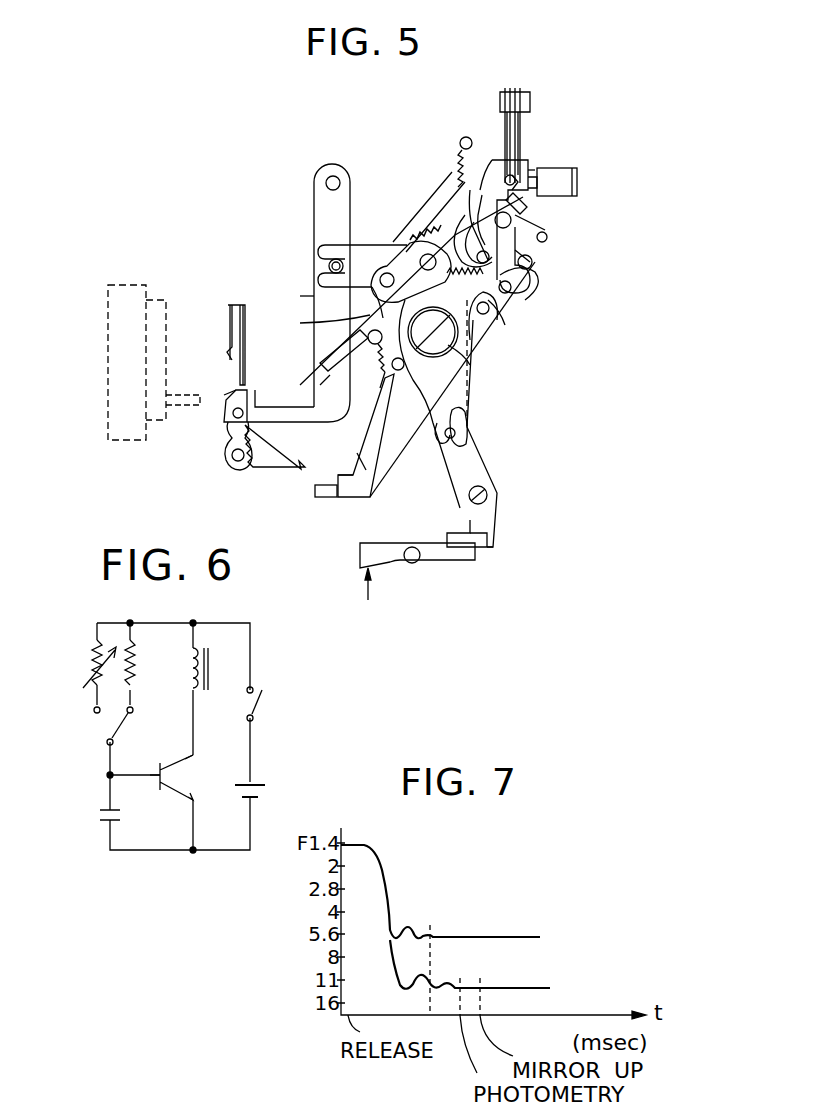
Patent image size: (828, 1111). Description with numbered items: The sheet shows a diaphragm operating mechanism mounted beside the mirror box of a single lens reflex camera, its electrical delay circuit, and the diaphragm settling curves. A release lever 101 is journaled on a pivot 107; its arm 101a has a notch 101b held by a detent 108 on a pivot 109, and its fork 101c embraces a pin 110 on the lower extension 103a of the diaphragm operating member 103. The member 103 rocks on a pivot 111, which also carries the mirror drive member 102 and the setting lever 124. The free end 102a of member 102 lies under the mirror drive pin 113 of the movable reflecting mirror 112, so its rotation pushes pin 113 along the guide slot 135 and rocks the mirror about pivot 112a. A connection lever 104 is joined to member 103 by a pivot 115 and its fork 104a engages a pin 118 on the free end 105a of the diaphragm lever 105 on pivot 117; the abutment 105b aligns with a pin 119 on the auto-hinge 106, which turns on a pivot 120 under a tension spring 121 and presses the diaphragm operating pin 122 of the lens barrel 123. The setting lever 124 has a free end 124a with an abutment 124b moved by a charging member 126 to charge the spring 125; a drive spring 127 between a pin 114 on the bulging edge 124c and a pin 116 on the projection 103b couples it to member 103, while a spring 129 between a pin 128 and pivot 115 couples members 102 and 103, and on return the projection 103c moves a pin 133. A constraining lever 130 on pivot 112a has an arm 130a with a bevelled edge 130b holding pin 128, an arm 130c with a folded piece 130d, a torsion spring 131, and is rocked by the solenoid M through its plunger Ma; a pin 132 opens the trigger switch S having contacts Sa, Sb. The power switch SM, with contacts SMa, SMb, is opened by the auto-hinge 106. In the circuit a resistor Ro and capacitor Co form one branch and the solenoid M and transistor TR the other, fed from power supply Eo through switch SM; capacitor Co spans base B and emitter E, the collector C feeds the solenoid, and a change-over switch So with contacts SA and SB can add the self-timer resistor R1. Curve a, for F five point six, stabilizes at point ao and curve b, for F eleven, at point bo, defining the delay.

In FIG. 5, the release lever 101 is at (498, 492).
In FIG. 5, the arm 101a is at (496, 522).
In FIG. 5, the notch 101b is at (488, 550).
In FIG. 5, the fork 101c is at (470, 455).
In FIG. 5, the mirror drive member 102 is at (528, 305).
In FIG. 5, the free end 102a is at (490, 265).
In FIG. 5, the diaphragm operating member 103 is at (405, 210).
In FIG. 5, the lower extension 103a is at (457, 435).
In FIG. 5, the left-hand projection 103b is at (314, 321).
In FIG. 5, the projection 103c is at (490, 314).
In FIG. 5, the connection lever 104 is at (368, 245).
In FIG. 5, the fork 104a is at (322, 254).
In FIG. 5, the diaphragm lever 105 is at (320, 185).
In FIG. 5, the free end 105a is at (316, 296).
In FIG. 5, the abutment 105b is at (232, 400).
In FIG. 5, the auto-hinge 106 is at (228, 440).
In FIG. 5, the pivot 107 is at (468, 498).
In FIG. 5, the detent 108 is at (448, 565).
In FIG. 5, the pivot 109 is at (412, 564).
In FIG. 5, the pin 110 is at (417, 347).
In FIG. 5, the pivot 111 is at (465, 385).
In FIG. 5, the movable reflecting mirror 112 is at (480, 215).
In FIG. 5, the pivot 112a is at (512, 210).
In FIG. 5, the mirror drive pin 113 is at (518, 262).
In FIG. 5, the pin 114 is at (385, 385).
In FIG. 5, the pivot 115 is at (410, 240).
In FIG. 5, the pin 116 is at (333, 355).
In FIG. 5, the pivot 117 is at (334, 176).
In FIG. 5, the pin 118 is at (328, 266).
In FIG. 5, the pin 119 is at (232, 412).
In FIG. 5, the pivot 120 is at (236, 462).
In FIG. 5, the tension spring 121 is at (270, 462).
In FIG. 5, the diaphragm operating pin 122 is at (180, 405).
In FIG. 5, the lens barrel 123 is at (138, 440).
In FIG. 5, the setting lever 124 is at (465, 400).
In FIG. 5, the free end 124a is at (344, 454).
In FIG. 5, the abutment 124b is at (352, 498).
In FIG. 5, the bulging edge 124c is at (328, 380).
In FIG. 5, the charging spring 125 is at (460, 146).
In FIG. 5, the charging member 126 is at (325, 498).
In FIG. 5, the tension drive spring 127 is at (392, 368).
In FIG. 5, the pin 128 is at (498, 312).
In FIG. 5, the tension spring 129 is at (471, 232).
In FIG. 5, the constraining lever 130 is at (528, 200).
In FIG. 5, the arm 130a is at (525, 235).
In FIG. 5, the bevelled edge 130b is at (530, 270).
In FIG. 5, the arm 130c is at (490, 165).
In FIG. 5, the folded piece 130d is at (527, 172).
In FIG. 5, the torsion spring 131 is at (548, 237).
In FIG. 5, the pin 132 is at (520, 170).
In FIG. 5, the pin 133 is at (472, 366).
In FIG. 5, the elongate guide slot 135 is at (483, 195).
In FIG. 5, the photometry trigger switch S is at (531, 93).
In FIG. 5, the movable contact Sa is at (504, 115).
In FIG. 5, the movable contact Sb is at (521, 118).
In FIG. 5, the power switch SM is at (238, 298).
In FIG. 6, the power switch SM is at (262, 705).
In FIG. 5, the movable contact SMa is at (246, 350).
In FIG. 5, the movable contact SMb is at (232, 345).
In FIG. 5, the solenoid M is at (578, 188).
In FIG. 6, the solenoid M is at (208, 660).
In FIG. 5, the plunger Ma is at (537, 178).
In FIG. 6, the self-timer resistor R1 is at (90, 665).
In FIG. 6, the resistor Ro is at (142, 652).
In FIG. 6, the contact SB is at (93, 710).
In FIG. 6, the contact SA is at (134, 710).
In FIG. 6, the change-over switch So is at (107, 743).
In FIG. 6, the transistor TR is at (163, 790).
In FIG. 6, the base B is at (150, 768).
In FIG. 6, the collector C is at (182, 748).
In FIG. 6, the emitter E is at (200, 793).
In FIG. 6, the capacitor Co is at (100, 812).
In FIG. 6, the power supply Eo is at (255, 797).
In FIG. 7, the curve a is at (400, 934).
In FIG. 7, the point ao is at (432, 937).
In FIG. 7, the curve b is at (408, 986).
In FIG. 7, the point bo is at (455, 989).